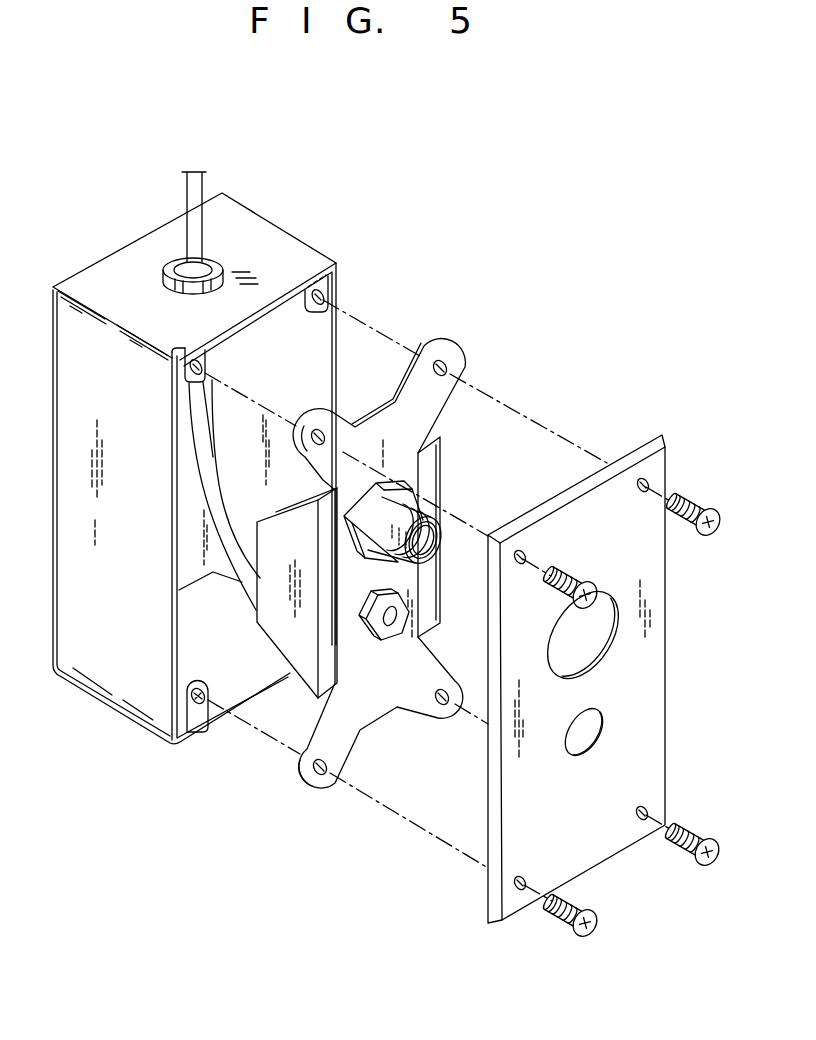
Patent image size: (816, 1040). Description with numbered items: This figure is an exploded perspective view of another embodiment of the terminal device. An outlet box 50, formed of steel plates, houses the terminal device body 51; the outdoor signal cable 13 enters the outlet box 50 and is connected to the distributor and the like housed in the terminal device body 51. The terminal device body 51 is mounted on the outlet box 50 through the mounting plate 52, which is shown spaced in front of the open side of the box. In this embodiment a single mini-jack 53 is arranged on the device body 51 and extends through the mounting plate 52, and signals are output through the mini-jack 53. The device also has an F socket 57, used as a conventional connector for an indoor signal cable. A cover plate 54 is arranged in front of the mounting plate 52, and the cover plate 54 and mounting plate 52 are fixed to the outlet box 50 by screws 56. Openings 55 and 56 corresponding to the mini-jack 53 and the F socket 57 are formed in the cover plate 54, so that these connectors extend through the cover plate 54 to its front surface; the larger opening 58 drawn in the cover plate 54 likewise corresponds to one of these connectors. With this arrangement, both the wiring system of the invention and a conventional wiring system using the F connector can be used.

The outdoor signal cable 13 is at (205, 178).
The outlet box 50 is at (300, 247).
The terminal device body 51 is at (298, 685).
The mounting plate 52 is at (440, 412).
The mini-jack 53 is at (374, 638).
The cover plate 54 is at (665, 725).
The opening 55 is at (598, 742).
The screws 56 is at (708, 507).
The F socket 57 is at (395, 557).
The large hole 58 is at (610, 650).